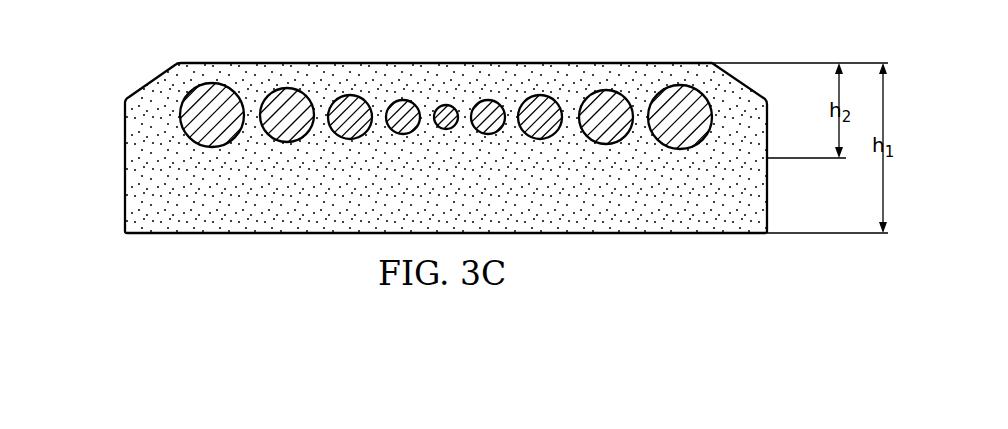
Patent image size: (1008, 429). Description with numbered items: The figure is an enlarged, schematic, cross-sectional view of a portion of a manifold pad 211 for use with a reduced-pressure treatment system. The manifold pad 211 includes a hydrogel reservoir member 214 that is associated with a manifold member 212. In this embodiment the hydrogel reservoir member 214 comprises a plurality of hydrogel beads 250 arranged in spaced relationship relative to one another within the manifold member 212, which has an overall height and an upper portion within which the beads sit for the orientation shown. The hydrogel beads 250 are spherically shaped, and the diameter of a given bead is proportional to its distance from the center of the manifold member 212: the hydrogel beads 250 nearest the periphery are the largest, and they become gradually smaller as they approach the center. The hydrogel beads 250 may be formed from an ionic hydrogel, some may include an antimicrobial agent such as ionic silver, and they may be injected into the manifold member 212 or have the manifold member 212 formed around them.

The manifold pad 211 is at (142, 83).
The manifold member 212 is at (131, 170).
The hydrogel reservoir member 214 is at (207, 83).
The hydrogel beads 250 is at (225, 92).